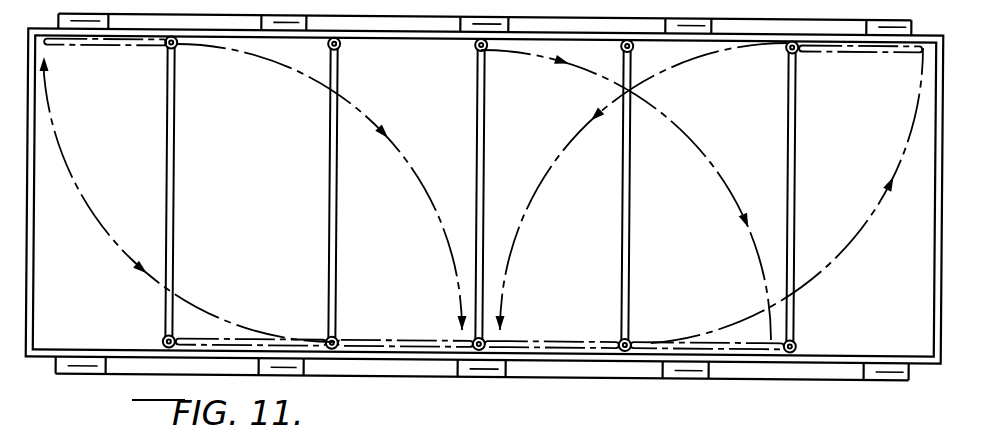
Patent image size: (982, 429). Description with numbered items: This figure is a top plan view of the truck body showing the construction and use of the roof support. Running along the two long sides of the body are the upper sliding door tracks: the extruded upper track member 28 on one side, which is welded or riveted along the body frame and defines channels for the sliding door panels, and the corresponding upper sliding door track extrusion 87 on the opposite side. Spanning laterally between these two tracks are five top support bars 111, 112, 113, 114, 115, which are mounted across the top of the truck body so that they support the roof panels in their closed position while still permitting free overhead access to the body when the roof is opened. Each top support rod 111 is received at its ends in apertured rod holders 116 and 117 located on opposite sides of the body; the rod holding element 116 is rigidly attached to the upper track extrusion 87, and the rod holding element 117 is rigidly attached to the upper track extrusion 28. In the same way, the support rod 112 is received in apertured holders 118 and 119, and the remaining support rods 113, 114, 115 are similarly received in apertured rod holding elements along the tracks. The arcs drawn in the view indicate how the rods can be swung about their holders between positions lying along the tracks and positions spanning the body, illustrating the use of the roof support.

The upper track member 28 is at (68, 346).
The upper sliding door track extrusion 87 is at (707, 45).
The top support rod 111 is at (167, 150).
The support rod 112 is at (330, 167).
The support rod 113 is at (477, 148).
The support rod 114 is at (623, 258).
The support rod 115 is at (789, 156).
The apertured rod holder 116 is at (177, 48).
The apertured rod holder 117 is at (165, 341).
The apertured holder 118 is at (339, 48).
The apertured holder 119 is at (339, 342).